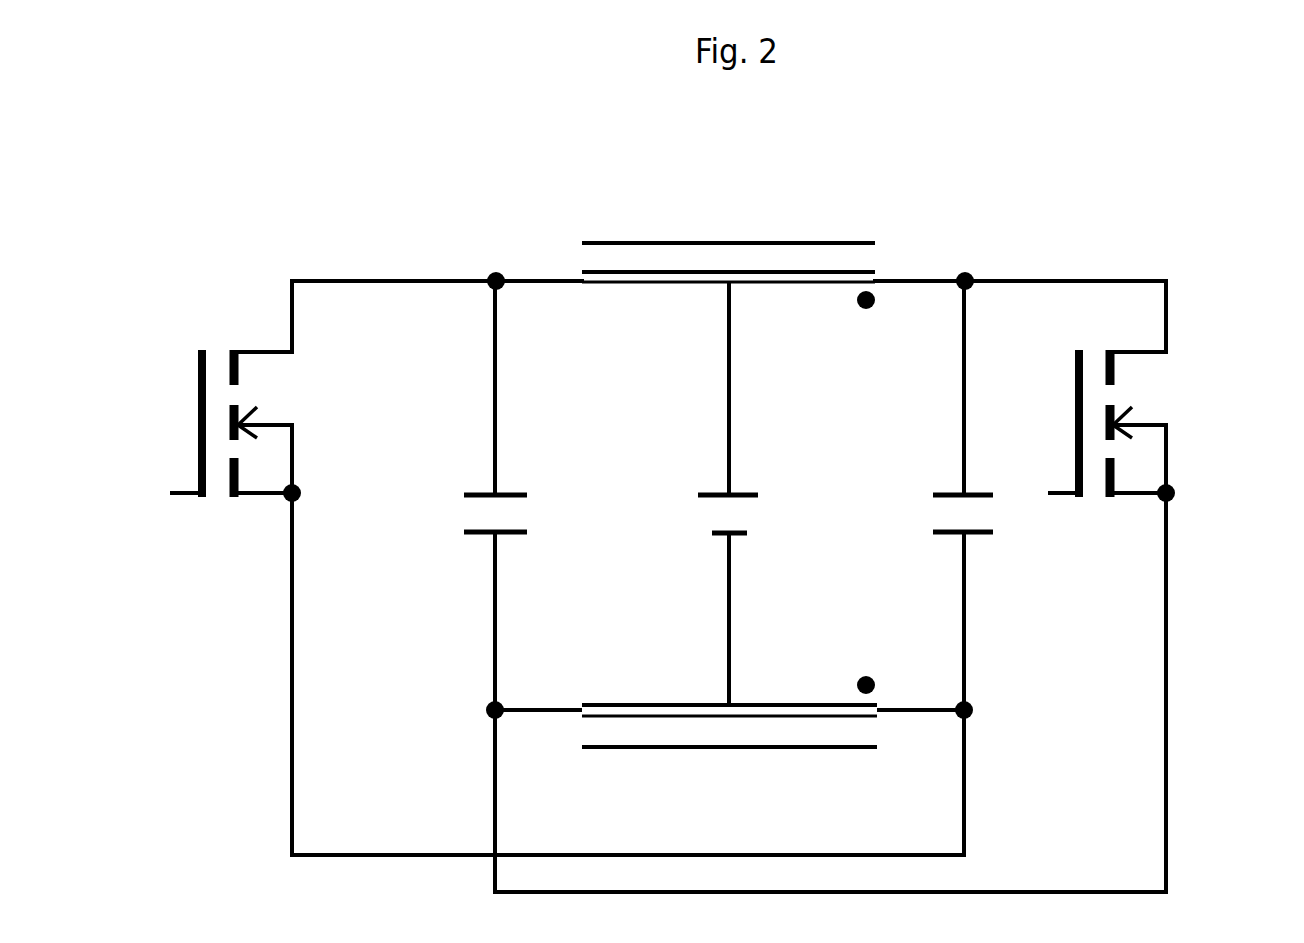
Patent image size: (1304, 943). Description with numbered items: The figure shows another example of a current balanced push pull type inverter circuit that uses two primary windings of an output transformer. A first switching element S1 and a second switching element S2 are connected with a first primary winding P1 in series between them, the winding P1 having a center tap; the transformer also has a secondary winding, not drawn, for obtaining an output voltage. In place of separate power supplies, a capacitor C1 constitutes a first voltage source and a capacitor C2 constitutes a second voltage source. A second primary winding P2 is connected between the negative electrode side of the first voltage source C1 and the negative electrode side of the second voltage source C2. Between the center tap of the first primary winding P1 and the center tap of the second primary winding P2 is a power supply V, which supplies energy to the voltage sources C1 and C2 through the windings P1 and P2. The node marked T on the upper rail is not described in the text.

The terminal node T is at (515, 253).
The first primary winding P1 is at (728, 369).
The second primary winding P2 is at (729, 640).
The power supply V is at (741, 566).
The capacitor C1 is at (913, 531).
The capacitor C2 is at (533, 531).
The first switching element S1 is at (296, 423).
The second switching element S2 is at (1174, 423).